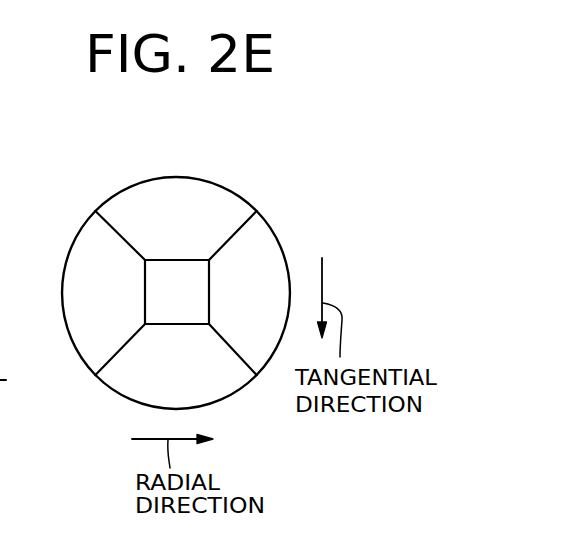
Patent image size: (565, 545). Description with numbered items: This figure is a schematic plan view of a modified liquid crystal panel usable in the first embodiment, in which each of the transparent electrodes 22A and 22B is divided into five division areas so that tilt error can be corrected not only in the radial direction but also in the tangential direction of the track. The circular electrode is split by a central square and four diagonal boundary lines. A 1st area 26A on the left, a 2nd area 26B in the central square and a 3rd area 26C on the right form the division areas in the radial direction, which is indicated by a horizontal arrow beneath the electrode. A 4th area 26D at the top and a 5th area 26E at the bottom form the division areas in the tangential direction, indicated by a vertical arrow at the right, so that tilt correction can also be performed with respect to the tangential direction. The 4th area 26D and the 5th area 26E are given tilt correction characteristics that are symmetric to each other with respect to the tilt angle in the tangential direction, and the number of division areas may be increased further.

The transparent electrode 22A is at (180, 273).
The transparent electrode 22B is at (180, 273).
The 1st area 26A is at (88, 228).
The 2nd area 26B is at (143, 265).
The 3rd area 26C is at (275, 232).
The 4th area 26D is at (222, 195).
The 5th area 26E is at (127, 387).